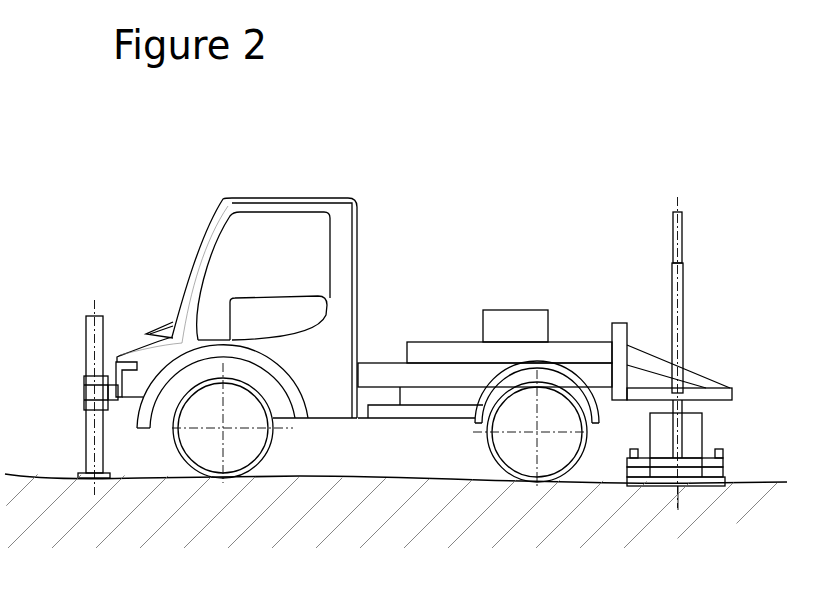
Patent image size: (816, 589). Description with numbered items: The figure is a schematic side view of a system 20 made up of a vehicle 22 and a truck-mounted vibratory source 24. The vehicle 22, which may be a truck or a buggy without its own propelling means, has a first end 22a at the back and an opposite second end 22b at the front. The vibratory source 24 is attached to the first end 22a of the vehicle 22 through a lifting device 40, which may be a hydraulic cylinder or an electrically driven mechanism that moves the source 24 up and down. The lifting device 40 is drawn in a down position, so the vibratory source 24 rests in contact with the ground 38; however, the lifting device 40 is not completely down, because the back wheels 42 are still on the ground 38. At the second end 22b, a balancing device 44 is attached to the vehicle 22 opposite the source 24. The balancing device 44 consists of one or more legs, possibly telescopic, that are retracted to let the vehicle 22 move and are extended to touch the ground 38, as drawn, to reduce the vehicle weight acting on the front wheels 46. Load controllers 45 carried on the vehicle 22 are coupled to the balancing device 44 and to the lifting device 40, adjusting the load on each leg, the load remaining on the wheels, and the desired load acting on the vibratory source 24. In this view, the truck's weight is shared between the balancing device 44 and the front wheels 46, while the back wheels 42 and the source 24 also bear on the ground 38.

The system 20 is at (432, 145).
The vehicle 22 is at (442, 339).
The first end 22a is at (606, 338).
The second end 22b is at (119, 403).
The vibratory source 24 is at (700, 428).
The ground 38 is at (422, 531).
The lifting device 40 is at (671, 389).
The back wheels 42 is at (520, 452).
The balancing device 44 is at (82, 393).
The load controllers 45 is at (528, 339).
The front wheels 46 is at (233, 457).